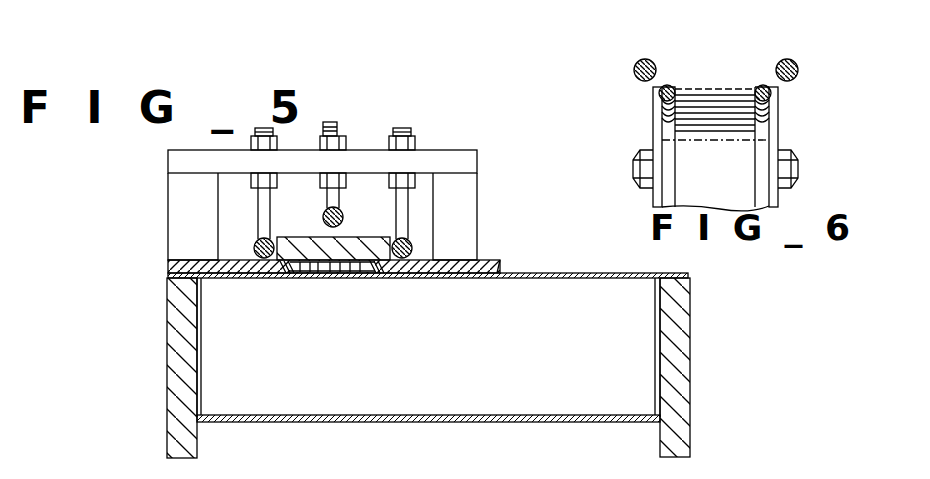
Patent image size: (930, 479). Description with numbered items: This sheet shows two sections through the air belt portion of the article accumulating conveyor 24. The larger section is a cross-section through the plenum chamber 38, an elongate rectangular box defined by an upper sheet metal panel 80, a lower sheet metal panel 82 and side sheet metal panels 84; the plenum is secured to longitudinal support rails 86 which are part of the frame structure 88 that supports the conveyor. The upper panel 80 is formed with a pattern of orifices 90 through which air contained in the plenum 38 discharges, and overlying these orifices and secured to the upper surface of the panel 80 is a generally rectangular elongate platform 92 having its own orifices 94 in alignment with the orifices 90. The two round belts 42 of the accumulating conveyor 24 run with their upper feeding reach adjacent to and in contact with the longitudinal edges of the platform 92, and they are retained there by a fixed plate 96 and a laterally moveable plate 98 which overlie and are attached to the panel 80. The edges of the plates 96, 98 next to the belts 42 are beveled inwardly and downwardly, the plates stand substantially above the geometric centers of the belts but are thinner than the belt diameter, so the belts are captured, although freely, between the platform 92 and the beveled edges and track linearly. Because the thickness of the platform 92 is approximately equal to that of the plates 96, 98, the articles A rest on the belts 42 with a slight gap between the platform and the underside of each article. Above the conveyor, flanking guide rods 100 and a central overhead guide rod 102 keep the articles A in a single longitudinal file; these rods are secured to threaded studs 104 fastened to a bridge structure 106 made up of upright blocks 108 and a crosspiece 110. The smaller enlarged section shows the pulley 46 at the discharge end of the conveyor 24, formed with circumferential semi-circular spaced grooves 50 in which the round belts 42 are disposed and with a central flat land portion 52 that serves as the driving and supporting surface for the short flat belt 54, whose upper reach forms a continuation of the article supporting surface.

In FIG. 5, the article accumulating conveyor 24 is at (492, 229).
In FIG. 5, the plenum chamber 38 is at (522, 407).
In FIG. 5, the belts 42 is at (282, 274).
In FIG. 6, the belts 42 is at (655, 99).
In FIG. 6, the pulley 46 is at (653, 130).
In FIG. 6, the grooves 50 is at (762, 180).
In FIG. 6, the flat land portion 52 is at (740, 163).
In FIG. 6, the flat belt 54 is at (713, 87).
In FIG. 5, the upper sheet metal panel 80 is at (549, 279).
In FIG. 5, the lower sheet metal panel 82 is at (400, 414).
In FIG. 5, the side sheet metal panels 84 is at (201, 358).
In FIG. 5, the longitudinal support rails 86 is at (167, 362).
In FIG. 5, the frame structure 88 is at (158, 412).
In FIG. 5, the orifices 90 is at (320, 274).
In FIG. 5, the platform 92 is at (338, 266).
In FIG. 5, the orifices 94 is at (361, 274).
In FIG. 5, the fixed plate 96 is at (168, 268).
In FIG. 5, the laterally moveable plate 98 is at (500, 268).
In FIG. 5, the flanking guide rods 100 is at (254, 243).
In FIG. 6, the flanking guide rods 100 is at (641, 81).
In FIG. 5, the central overhead guide rod 102 is at (340, 209).
In FIG. 5, the threaded studs 104 is at (258, 219).
In FIG. 5, the bridge structure 106 is at (160, 182).
In FIG. 5, the upright blocks 108 is at (168, 200).
In FIG. 5, the crosspiece 110 is at (168, 157).
In FIG. 5, the articles A is at (297, 235).